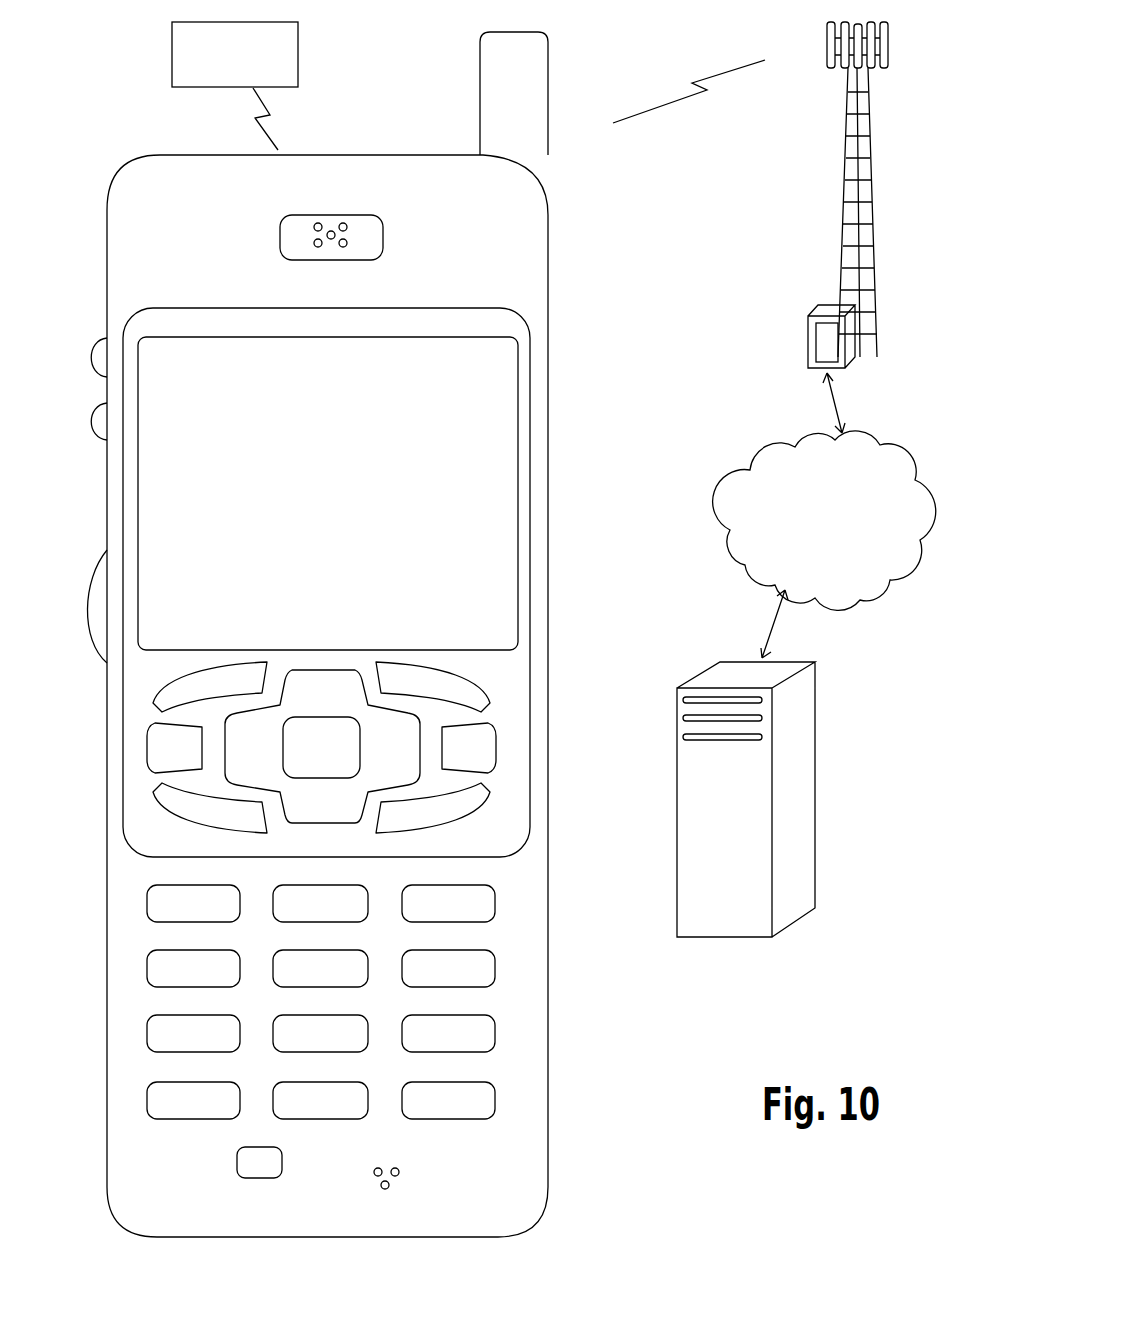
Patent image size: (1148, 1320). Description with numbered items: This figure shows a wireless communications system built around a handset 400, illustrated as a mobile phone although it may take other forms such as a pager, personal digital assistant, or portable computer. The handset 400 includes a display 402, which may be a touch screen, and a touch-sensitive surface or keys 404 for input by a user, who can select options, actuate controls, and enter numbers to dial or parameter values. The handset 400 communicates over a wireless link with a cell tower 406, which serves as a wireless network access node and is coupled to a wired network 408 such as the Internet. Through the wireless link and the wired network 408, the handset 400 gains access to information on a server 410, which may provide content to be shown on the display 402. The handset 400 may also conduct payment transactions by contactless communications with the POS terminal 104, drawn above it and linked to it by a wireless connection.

The POS terminal 104 is at (298, 58).
The handset 400 is at (152, 1236).
The display 402 is at (521, 353).
The keys 404 is at (556, 1147).
The cell tower 406 is at (841, 210).
The wired network 408 is at (751, 570).
The server 410 is at (725, 937).